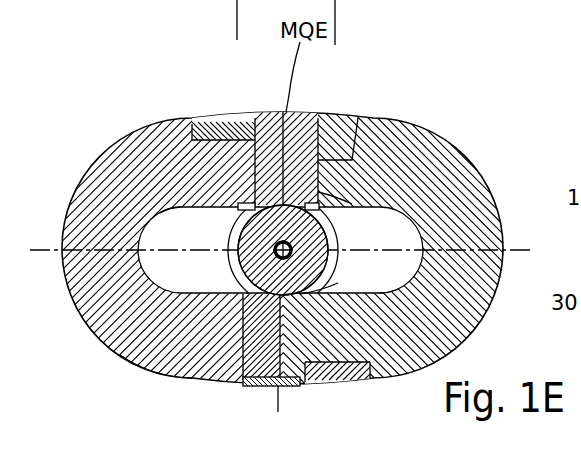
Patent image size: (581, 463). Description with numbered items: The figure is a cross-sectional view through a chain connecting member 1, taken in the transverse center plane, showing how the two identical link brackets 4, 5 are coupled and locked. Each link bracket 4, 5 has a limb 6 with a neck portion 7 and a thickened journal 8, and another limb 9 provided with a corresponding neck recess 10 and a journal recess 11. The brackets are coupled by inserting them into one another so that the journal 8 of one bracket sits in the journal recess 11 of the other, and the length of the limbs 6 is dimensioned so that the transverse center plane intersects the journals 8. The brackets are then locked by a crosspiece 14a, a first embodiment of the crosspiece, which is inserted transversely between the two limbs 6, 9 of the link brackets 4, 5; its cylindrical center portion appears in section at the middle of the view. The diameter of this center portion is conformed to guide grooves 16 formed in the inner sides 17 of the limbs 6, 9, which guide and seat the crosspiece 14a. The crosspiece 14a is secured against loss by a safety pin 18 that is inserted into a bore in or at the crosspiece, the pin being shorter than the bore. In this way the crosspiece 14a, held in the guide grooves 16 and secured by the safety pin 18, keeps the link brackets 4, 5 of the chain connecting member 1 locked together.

The chain connecting member 1 is at (453, 101).
The link bracket 4 is at (478, 159).
The link bracket 5 is at (85, 184).
The limb 6 is at (359, 118).
The neck portion 7 is at (225, 121).
The journal 8 is at (300, 118).
The limb 9 is at (172, 379).
The neck recess 10 is at (333, 366).
The journal recess 11 is at (266, 386).
The crosspiece 14a is at (234, 239).
The guide groove 16 is at (332, 193).
The inner side 17 is at (188, 204).
The safety pin 18 is at (236, 268).